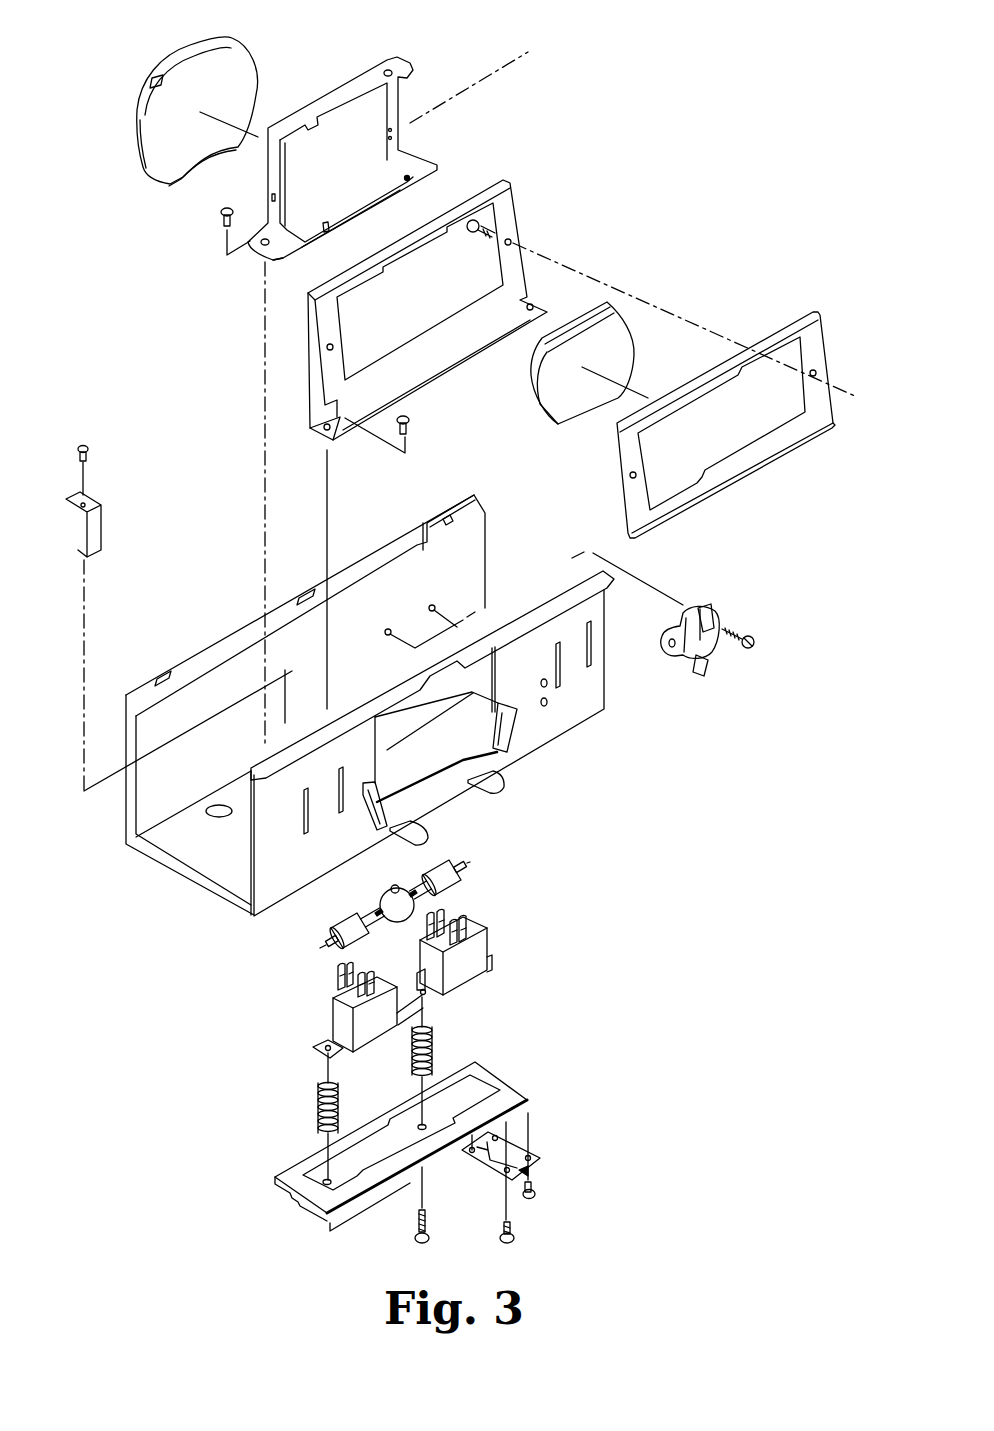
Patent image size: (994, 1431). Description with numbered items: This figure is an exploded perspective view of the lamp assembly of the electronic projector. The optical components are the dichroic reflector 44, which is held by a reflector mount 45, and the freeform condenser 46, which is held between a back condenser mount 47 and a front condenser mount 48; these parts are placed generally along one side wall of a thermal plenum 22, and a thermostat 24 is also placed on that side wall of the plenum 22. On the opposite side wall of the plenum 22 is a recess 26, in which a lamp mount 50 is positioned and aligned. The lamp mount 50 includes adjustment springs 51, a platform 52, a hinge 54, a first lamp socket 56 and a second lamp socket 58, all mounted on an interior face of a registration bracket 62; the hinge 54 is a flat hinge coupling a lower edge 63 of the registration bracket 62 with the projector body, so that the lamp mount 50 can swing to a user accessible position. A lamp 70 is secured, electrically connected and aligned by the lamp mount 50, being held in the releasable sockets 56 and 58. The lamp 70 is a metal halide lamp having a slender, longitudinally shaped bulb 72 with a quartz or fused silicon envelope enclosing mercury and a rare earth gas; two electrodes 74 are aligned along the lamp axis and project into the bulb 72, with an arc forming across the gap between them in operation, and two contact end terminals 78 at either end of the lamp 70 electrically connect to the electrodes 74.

The thermal plenum 22 is at (171, 671).
The thermostat 24 is at (692, 612).
The recess 26 is at (462, 683).
The dichroic reflector 44 is at (179, 52).
The reflector mount 45 is at (350, 80).
The freeform condenser 46 is at (618, 341).
The back condenser mount 47 is at (475, 200).
The front condenser mount 48 is at (777, 333).
The lamp mount 50 is at (208, 1068).
The adjustment springs 51 is at (433, 1050).
The platform 52 is at (329, 1022).
The hinge 54 is at (540, 1155).
The first lamp socket 56 is at (336, 980).
The second lamp socket 58 is at (467, 912).
The registration bracket 62 is at (283, 1188).
The lower edge 63 is at (510, 1088).
The lamp 70 is at (385, 900).
The bulb 72 is at (402, 920).
The electrodes 74 is at (415, 880).
The contact end terminals 78 is at (323, 945).